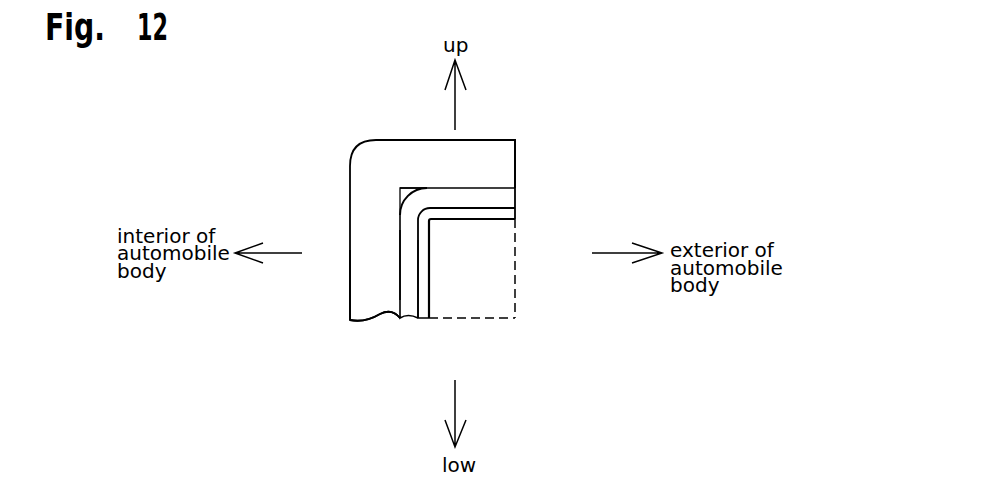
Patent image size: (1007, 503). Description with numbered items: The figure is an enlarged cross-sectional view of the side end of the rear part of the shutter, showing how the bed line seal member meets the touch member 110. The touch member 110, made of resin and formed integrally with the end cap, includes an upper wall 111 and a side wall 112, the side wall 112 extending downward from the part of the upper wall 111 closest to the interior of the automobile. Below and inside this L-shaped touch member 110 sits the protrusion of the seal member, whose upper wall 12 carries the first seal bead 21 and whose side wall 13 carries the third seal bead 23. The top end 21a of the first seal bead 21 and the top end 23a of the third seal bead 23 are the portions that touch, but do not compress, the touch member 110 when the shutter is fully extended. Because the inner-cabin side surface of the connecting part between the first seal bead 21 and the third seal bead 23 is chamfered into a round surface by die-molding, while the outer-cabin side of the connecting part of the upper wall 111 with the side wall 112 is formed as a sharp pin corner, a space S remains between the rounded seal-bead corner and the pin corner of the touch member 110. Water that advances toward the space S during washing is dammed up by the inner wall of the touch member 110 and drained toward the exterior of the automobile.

The touch member 110 is at (373, 163).
The upper wall 111 is at (497, 163).
The side wall 112 is at (375, 305).
The first seal bead 21 is at (500, 198).
The top end of first seal bead 21a is at (463, 188).
The space S is at (405, 190).
The third seal bead 23 is at (407, 305).
The top end of third seal bead 23a is at (399, 264).
The upper wall 12 is at (468, 213).
The side wall 13 is at (425, 263).